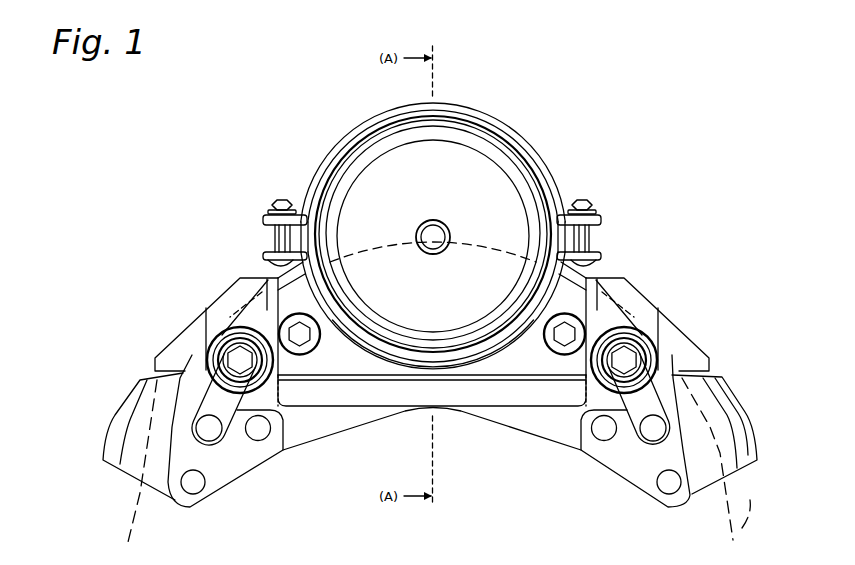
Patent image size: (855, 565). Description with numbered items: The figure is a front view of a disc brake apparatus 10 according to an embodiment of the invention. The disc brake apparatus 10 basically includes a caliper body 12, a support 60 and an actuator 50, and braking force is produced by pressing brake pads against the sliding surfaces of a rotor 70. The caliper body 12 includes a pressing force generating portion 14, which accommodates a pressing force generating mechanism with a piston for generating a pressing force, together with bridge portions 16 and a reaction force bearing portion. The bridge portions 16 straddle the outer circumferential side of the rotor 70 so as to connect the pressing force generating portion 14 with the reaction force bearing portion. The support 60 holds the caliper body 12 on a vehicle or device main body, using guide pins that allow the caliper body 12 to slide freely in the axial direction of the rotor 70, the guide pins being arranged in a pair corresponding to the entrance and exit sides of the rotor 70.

The disc brake apparatus 10 is at (539, 120).
The caliper body 12 is at (637, 286).
The pressing force generating portion 14 is at (472, 395).
The bridge portions 16 is at (218, 310).
The actuator 50 is at (383, 170).
The support 60 is at (231, 489).
The rotor 70 is at (753, 500).